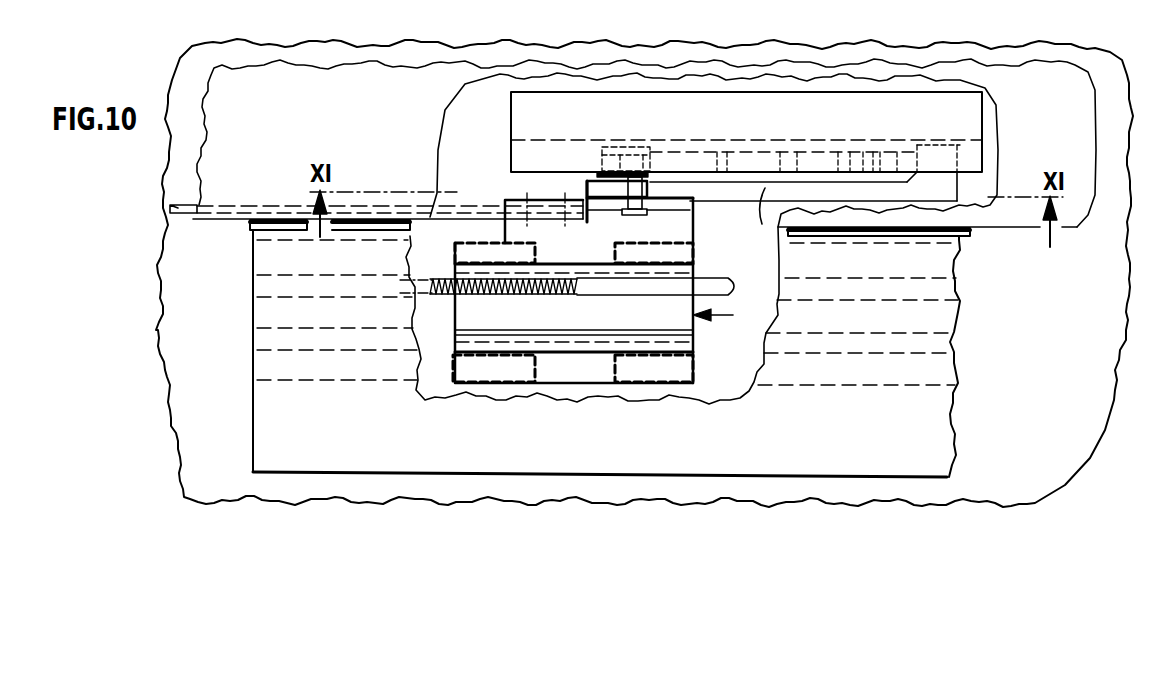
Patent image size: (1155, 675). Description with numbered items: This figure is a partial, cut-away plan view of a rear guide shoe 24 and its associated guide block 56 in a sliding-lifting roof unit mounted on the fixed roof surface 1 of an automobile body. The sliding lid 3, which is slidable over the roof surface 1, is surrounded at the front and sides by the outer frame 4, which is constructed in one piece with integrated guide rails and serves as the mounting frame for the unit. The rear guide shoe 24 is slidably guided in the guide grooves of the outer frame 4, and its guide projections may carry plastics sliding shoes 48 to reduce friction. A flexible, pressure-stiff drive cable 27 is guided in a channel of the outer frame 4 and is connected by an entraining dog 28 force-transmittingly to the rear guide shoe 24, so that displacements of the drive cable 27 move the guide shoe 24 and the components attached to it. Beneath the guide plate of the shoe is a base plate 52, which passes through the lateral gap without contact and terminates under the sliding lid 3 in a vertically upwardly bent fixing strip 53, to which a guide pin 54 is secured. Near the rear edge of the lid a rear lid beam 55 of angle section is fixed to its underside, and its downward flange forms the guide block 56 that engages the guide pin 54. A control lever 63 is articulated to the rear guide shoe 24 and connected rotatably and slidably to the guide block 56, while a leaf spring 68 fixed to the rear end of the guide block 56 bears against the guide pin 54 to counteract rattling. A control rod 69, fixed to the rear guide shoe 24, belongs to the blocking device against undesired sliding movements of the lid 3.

The fixed roof surface 1 is at (1080, 370).
The sliding lid 3 is at (325, 124).
The outer frame 4 is at (903, 492).
The rear guide shoe 24 is at (727, 315).
The drive cable 27 is at (443, 292).
The entraining dog 28 is at (625, 288).
The sliding shoes 48 is at (455, 253).
The base plate 52 is at (683, 232).
The fixing strip 53 is at (693, 203).
The guide pin 54 is at (647, 188).
The rear lid beam 55 is at (917, 113).
The guide block 56 is at (983, 155).
The control lever 63 is at (597, 175).
The leaf spring 68 is at (763, 222).
The control rod 69 is at (173, 208).